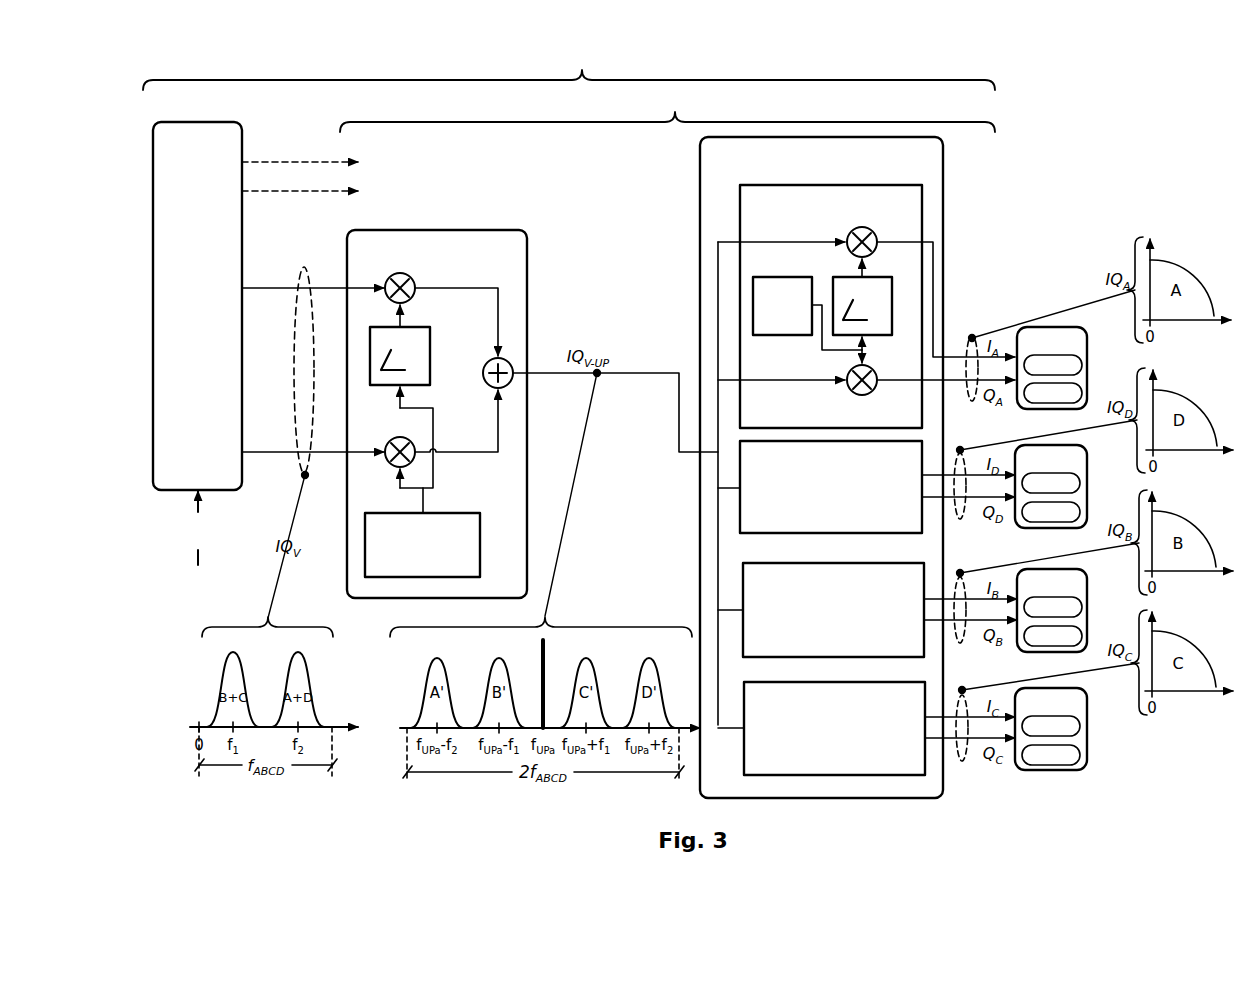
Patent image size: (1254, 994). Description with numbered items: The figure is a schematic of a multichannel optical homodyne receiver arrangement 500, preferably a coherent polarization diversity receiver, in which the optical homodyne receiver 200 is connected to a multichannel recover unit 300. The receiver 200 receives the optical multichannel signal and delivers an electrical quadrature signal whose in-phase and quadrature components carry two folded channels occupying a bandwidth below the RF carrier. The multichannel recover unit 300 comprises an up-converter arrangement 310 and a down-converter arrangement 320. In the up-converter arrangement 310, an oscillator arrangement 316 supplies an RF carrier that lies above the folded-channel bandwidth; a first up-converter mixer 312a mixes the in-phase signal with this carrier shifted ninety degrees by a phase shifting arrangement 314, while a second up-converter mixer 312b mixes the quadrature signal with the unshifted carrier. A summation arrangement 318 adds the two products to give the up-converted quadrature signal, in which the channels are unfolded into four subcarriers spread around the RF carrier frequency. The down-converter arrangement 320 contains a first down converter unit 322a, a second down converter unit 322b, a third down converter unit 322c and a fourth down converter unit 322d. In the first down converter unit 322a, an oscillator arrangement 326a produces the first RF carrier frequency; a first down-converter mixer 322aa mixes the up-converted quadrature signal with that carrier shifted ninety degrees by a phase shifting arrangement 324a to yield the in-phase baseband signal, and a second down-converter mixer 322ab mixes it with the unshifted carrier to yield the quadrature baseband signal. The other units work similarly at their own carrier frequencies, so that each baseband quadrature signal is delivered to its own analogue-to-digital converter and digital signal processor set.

The optical homodyne receiver arrangement 500 is at (569, 69).
The multichannel recover unit 300 is at (667, 111).
The optical homodyne receiver 200 is at (268, 343).
The up-converter arrangement 310 is at (437, 414).
The first up-converter mixer 312a is at (400, 270).
The second up-converter mixer 312b is at (400, 434).
The phase shifting arrangement 314 is at (416, 324).
The oscillator arrangement 316 is at (452, 510).
The summation arrangement 318 is at (485, 366).
The down-converter arrangement 320 is at (893, 467).
The first down converter unit 322a is at (913, 306).
The first down-converter mixer 322aa is at (866, 226).
The second down-converter mixer 322ab is at (866, 398).
The phase shifting arrangement 324a is at (845, 274).
The oscillator arrangement 326a is at (760, 338).
The fourth down converter unit 322d is at (913, 487).
The second down converter unit 322b is at (915, 610).
The third down converter unit 322c is at (915, 728).